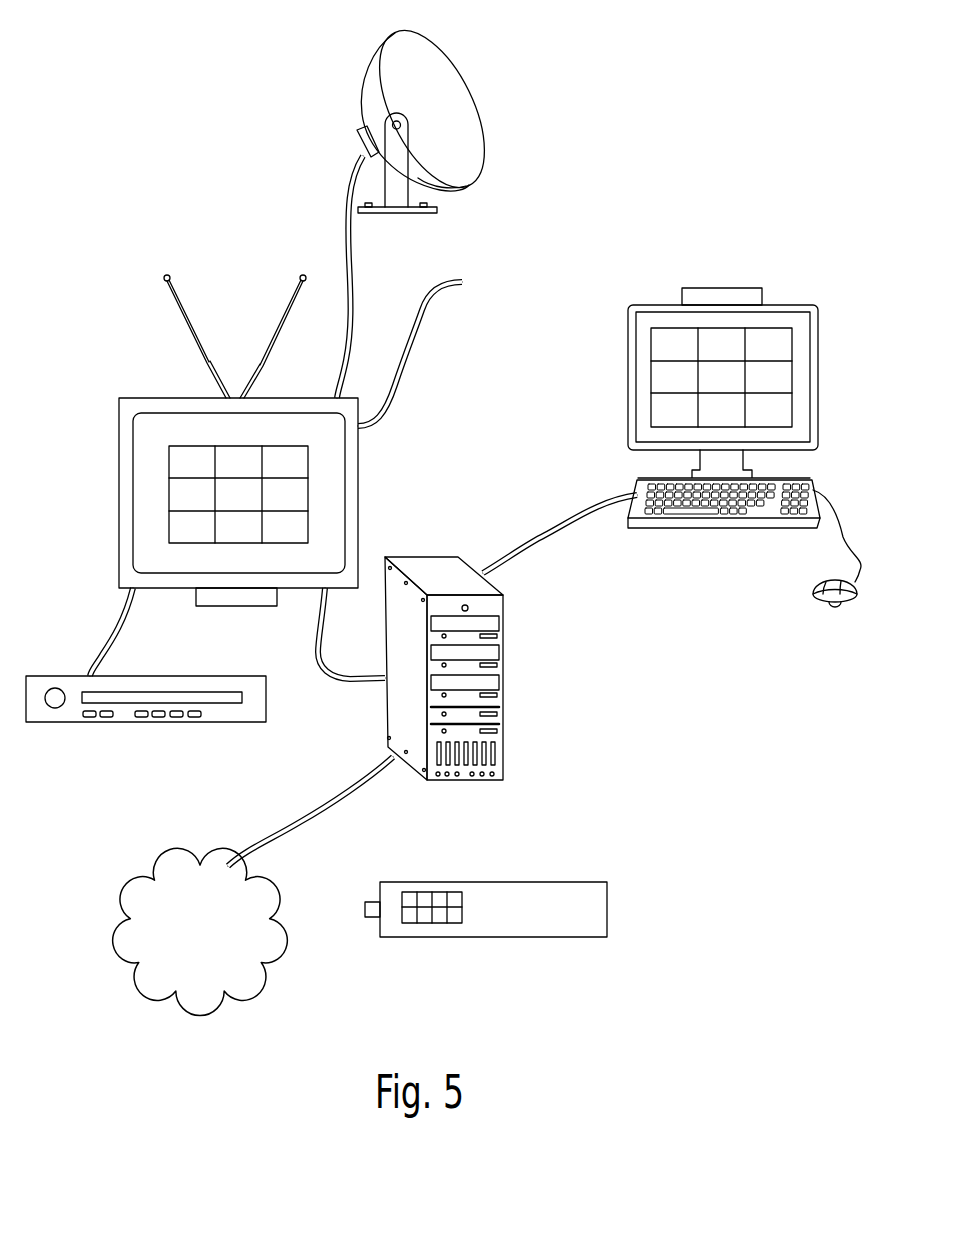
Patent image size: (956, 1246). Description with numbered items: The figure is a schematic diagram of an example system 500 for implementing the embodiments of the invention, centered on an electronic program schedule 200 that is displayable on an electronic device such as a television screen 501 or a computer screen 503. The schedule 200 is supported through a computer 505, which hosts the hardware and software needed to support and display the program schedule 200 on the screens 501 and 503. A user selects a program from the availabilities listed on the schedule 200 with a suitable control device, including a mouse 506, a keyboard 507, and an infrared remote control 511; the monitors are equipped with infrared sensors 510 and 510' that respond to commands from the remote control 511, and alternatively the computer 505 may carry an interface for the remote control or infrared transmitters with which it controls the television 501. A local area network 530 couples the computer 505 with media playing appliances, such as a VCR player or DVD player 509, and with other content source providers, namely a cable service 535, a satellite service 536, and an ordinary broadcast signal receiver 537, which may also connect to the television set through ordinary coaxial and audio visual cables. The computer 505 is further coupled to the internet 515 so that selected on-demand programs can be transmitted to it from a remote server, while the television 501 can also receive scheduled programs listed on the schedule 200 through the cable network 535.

The system 500 is at (124, 151).
The satellite service 536 is at (375, 105).
The local area network 530 is at (343, 232).
The cable service 535 is at (418, 335).
The broadcast signal receiver 537 is at (194, 344).
The television screen 501 is at (280, 469).
The electronic program schedule 200 is at (168, 488).
The infrared sensor 510 is at (232, 625).
The VCR player and/or DVD player 509 is at (128, 723).
The computer 505 is at (505, 737).
The computer screen 503 is at (680, 344).
The infrared sensor 510' is at (722, 257).
The keyboard 507 is at (722, 528).
The mouse 506 is at (822, 606).
The infrared remote control 511 is at (607, 912).
The internet 515 is at (205, 998).